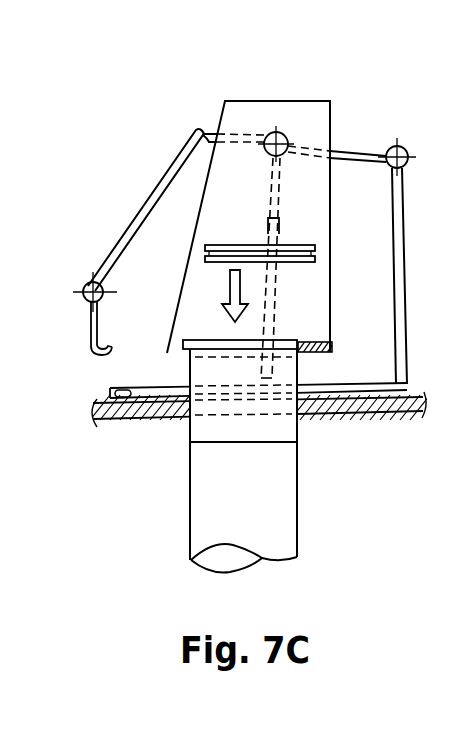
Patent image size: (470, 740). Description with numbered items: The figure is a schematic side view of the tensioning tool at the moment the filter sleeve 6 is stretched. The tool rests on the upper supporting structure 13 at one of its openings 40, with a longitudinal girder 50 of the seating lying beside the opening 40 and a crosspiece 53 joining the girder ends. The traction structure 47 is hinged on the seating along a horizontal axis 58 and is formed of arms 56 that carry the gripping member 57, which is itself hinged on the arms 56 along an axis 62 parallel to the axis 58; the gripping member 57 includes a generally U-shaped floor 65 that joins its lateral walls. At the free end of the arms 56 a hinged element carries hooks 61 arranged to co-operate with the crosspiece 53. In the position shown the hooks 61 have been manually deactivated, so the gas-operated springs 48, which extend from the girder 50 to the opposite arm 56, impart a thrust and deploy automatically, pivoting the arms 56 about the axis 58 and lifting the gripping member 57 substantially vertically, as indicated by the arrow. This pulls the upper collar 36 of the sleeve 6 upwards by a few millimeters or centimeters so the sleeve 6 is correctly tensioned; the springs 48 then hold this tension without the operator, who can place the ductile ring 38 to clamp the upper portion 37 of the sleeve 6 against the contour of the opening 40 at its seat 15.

The sleeve 6 is at (225, 571).
The upper supporting structure 13 is at (384, 413).
The tube seat 15 is at (183, 361).
The upper collar 36 is at (205, 337).
The upper portion 37 is at (265, 425).
The ductile ring 38 is at (226, 243).
The opening 40 is at (232, 419).
The traction structure 47 is at (334, 200).
The gas-operated springs 48 is at (283, 289).
The longitudinal girders 50 is at (352, 386).
The crosspiece 53 is at (110, 390).
The arms 56 is at (172, 166).
The gripping member 57 is at (337, 112).
The horizontal axis 58 is at (406, 144).
The hooks 61 is at (87, 338).
The axis 62 is at (287, 131).
The floor 65 is at (314, 340).